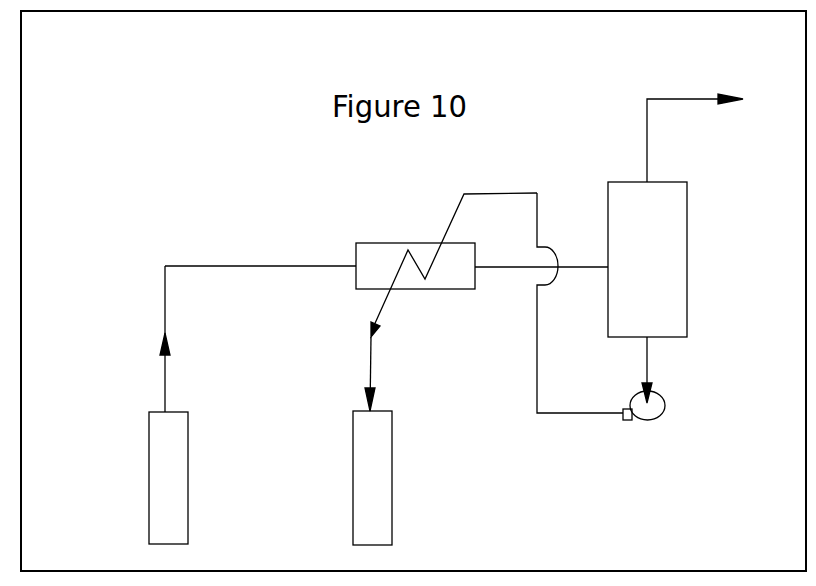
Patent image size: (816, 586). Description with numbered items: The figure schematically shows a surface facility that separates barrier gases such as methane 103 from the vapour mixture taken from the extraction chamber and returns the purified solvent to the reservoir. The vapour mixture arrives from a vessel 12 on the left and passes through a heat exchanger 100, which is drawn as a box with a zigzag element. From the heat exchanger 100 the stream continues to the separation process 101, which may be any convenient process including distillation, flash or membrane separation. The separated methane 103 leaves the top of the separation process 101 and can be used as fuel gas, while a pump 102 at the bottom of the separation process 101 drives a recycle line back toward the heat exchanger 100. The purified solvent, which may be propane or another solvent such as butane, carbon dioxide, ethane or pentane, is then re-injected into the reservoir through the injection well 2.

The injection well 2 is at (373, 452).
The feed vessel 12 is at (166, 470).
The heat exchanger 100 is at (373, 256).
The separation process 101 is at (650, 258).
The pump 102 is at (665, 413).
The barrier gases such as methane 103 is at (694, 99).